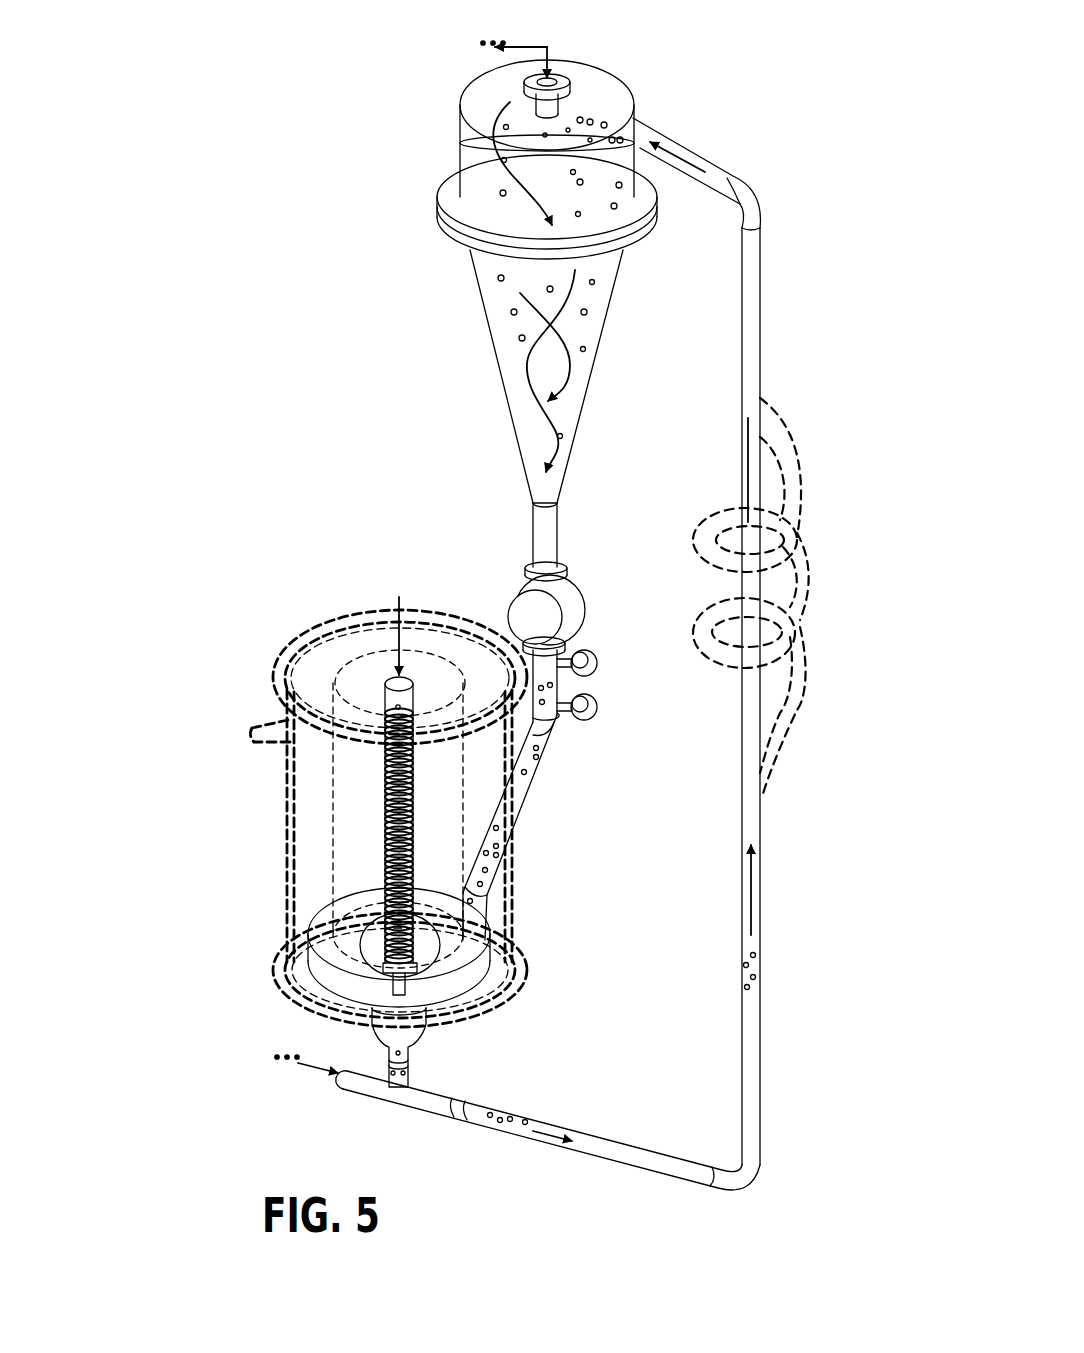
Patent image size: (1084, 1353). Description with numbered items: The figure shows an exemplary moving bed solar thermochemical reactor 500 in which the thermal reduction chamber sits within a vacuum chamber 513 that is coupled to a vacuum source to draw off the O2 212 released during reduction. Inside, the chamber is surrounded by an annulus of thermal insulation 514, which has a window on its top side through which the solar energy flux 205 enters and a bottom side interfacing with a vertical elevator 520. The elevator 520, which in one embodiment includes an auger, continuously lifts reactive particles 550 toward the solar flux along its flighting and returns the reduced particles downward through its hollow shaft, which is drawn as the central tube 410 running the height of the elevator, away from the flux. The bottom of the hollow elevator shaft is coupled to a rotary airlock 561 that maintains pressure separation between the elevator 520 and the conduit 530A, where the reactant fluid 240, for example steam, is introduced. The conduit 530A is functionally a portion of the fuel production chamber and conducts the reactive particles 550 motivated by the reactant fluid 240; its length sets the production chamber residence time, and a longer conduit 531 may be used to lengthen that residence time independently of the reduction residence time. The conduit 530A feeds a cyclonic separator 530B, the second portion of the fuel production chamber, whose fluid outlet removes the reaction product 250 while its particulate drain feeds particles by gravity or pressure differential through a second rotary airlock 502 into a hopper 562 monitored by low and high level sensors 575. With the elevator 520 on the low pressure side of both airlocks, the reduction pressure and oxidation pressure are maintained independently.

The reactor 500 is at (233, 142).
The reaction product 250 is at (535, 44).
The reactive particles 550 is at (738, 190).
The separator 530B is at (498, 363).
The rotary airlock 502 is at (575, 593).
The low and high level sensors 575 is at (597, 668).
The hopper 562 is at (517, 818).
The vacuum chamber 513 is at (322, 625).
The O2 212 is at (250, 731).
The thermal insulation 514 is at (333, 775).
The solar energy flux 205 is at (407, 640).
The light guide tube 410 is at (423, 707).
The elevator 520 is at (385, 850).
The rotary airlock 561 is at (417, 1036).
The reactant fluid 240 is at (337, 1082).
The conduit 530A is at (686, 1181).
The longer conduit 531 is at (798, 702).